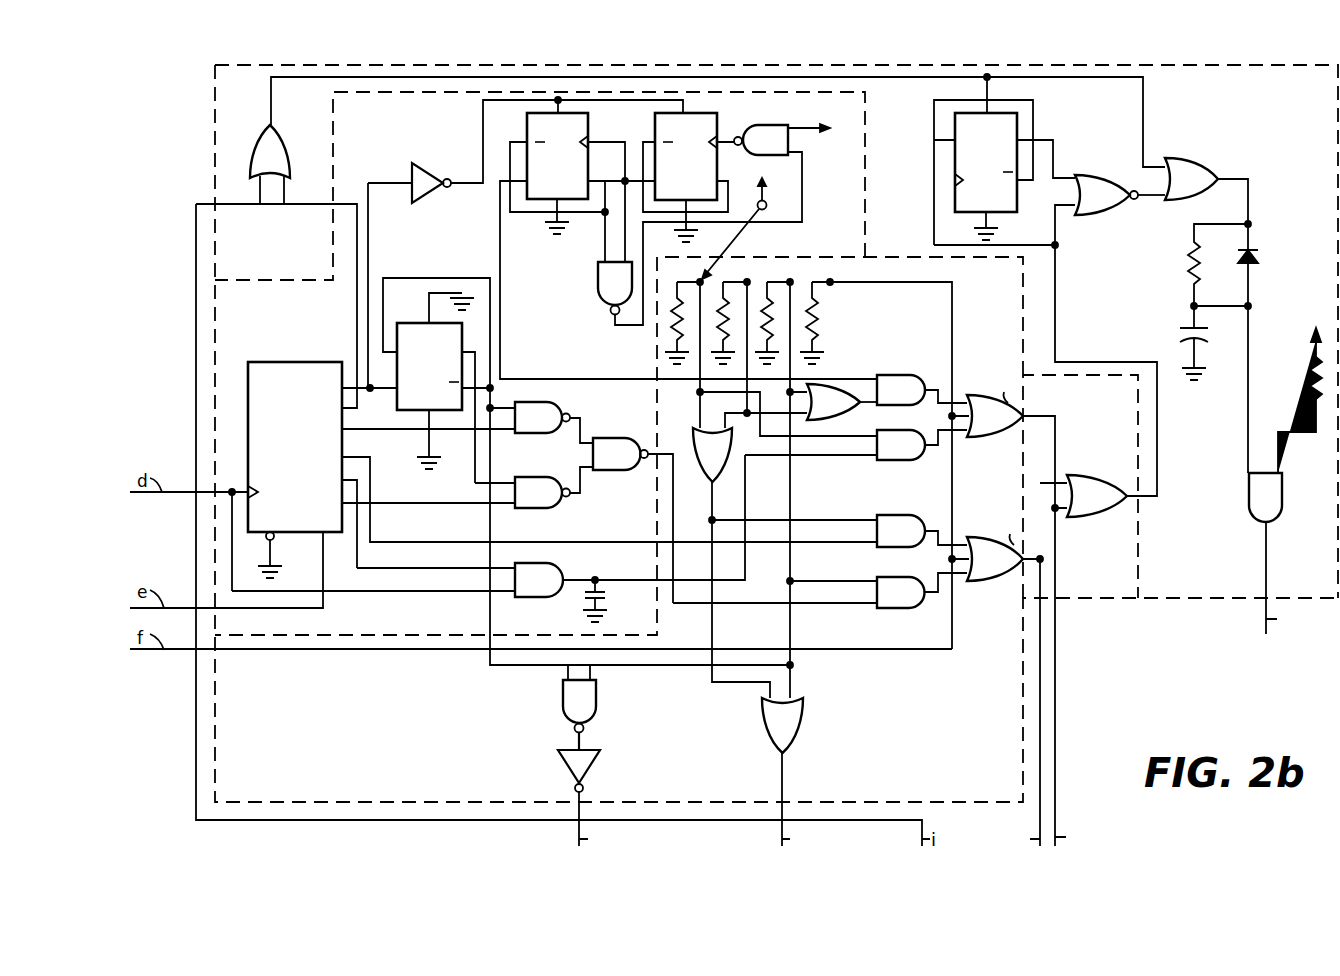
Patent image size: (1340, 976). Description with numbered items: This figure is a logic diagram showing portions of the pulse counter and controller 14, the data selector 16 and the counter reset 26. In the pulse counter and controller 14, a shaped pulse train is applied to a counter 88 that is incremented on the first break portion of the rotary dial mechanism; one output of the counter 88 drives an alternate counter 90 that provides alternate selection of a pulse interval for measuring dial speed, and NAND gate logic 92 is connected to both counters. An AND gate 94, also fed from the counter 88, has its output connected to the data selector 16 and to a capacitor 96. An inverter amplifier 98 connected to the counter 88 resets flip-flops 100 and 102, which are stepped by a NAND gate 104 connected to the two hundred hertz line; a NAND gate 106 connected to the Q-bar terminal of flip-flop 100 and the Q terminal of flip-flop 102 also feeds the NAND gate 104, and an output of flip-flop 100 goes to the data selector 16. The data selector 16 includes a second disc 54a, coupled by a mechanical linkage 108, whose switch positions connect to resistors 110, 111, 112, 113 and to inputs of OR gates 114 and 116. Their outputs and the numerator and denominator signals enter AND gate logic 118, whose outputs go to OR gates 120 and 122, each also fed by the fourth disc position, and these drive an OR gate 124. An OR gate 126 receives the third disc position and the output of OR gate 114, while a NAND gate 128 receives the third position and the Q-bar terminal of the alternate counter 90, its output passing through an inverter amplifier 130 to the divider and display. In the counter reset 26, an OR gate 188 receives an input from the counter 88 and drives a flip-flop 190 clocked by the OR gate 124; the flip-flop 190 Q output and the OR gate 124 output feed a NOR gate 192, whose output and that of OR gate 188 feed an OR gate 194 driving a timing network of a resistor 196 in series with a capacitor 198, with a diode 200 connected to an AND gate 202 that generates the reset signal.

The pulse counter and controller 14 is at (320, 317).
The data selector 16 is at (311, 709).
The counter reset 26 is at (1270, 114).
The second disc 54a is at (788, 203).
The counter 88 is at (269, 372).
The alternate counter 90 is at (409, 332).
The NAND gate logic 92 is at (572, 465).
The AND gate 94 is at (543, 578).
The capacitor 96 is at (604, 597).
The inverter amplifier 98 is at (425, 172).
The flip-flop 100 is at (527, 130).
The flip-flop 102 is at (655, 131).
The NAND gate 104 is at (770, 125).
The NAND gate 106 is at (600, 283).
The mechanical linkage 108 is at (738, 237).
The resistor 110 is at (676, 302).
The resistor 111 is at (722, 302).
The resistor 112 is at (766, 302).
The resistor 113 is at (811, 302).
The OR gate 114 is at (698, 447).
The OR gate 116 is at (838, 392).
The AND gate logic 118 is at (902, 453).
The OR gate 120 is at (985, 398).
The OR gate 122 is at (985, 545).
The OR gate 124 is at (1090, 480).
The OR gate 126 is at (797, 735).
The NAND gate 128 is at (595, 703).
The inverter amplifier 130 is at (590, 765).
The OR gate 188 is at (262, 145).
The flip-flop 190 is at (958, 154).
The NOR gate 192 is at (1100, 185).
The OR gate 194 is at (1180, 165).
The resistor 196 is at (1188, 260).
The capacitor 198 is at (1183, 337).
The diode 200 is at (1262, 257).
The AND gate 202 is at (1254, 500).